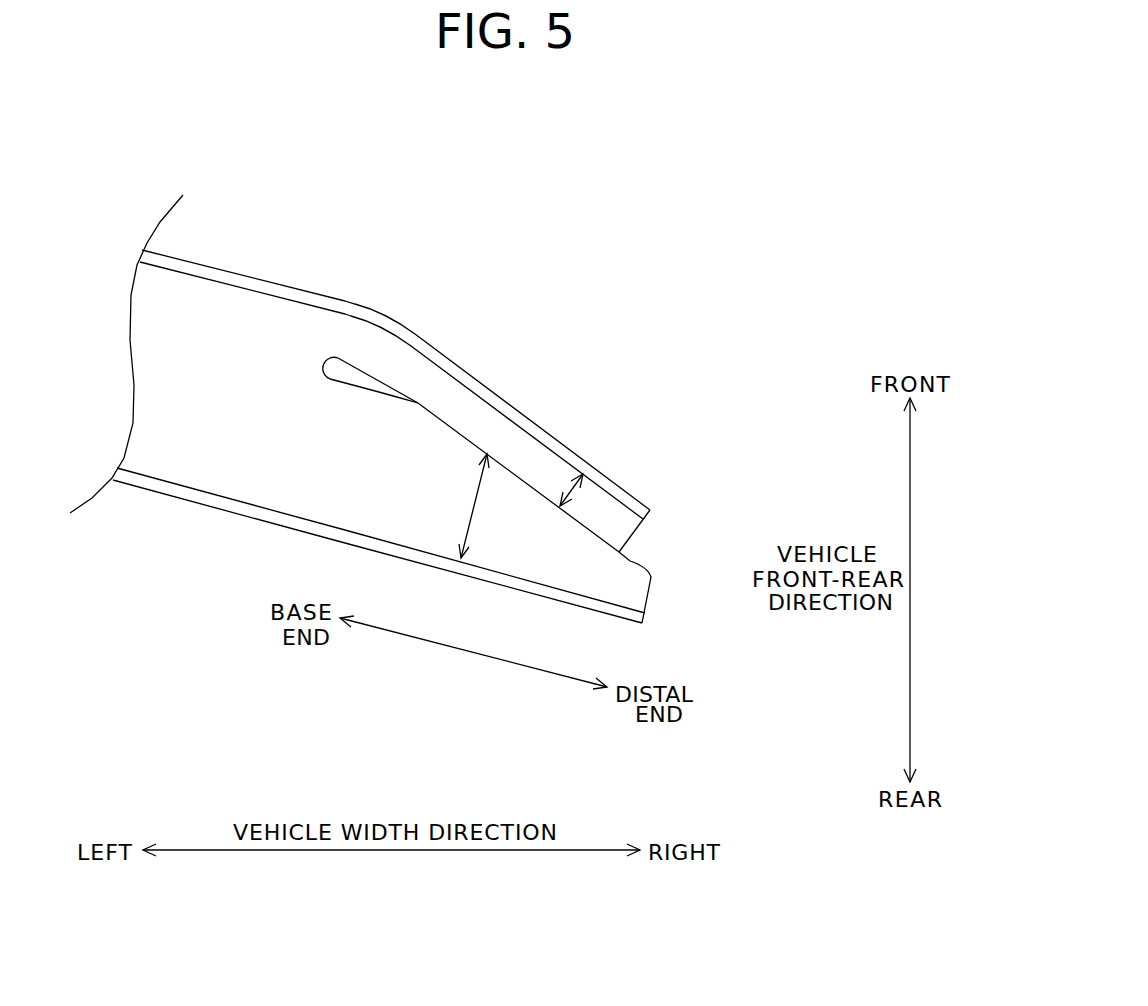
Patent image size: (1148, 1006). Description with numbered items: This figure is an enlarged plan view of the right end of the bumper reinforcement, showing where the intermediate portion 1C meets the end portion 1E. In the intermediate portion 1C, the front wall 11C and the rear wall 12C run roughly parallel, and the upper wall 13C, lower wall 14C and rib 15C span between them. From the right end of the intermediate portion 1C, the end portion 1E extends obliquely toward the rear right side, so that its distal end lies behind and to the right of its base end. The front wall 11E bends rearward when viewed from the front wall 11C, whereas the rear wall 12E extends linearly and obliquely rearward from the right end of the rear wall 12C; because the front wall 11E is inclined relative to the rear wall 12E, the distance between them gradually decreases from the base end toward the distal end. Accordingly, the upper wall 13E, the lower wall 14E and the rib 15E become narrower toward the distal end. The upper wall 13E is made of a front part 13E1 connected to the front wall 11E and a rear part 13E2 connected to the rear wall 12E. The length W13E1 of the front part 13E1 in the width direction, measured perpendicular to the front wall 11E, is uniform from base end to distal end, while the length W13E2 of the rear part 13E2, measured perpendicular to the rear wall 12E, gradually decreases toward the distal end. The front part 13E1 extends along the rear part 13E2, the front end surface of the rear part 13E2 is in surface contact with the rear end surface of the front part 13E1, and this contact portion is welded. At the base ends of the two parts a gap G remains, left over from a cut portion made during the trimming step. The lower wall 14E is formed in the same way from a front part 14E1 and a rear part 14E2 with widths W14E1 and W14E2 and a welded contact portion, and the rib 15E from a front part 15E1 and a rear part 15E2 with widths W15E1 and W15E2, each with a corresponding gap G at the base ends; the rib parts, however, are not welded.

The intermediate portion 1C is at (373, 264).
The end portion 1E is at (361, 256).
The front wall 11C is at (213, 267).
The rear wall 12C is at (147, 489).
The upper wall 13C is at (197, 380).
The lower wall 14C is at (126, 354).
The rib 15C is at (126, 354).
The front wall 11E is at (507, 402).
The rear wall 12E is at (562, 600).
The upper wall 13E is at (641, 585).
The lower wall 14E is at (471, 456).
The rib 15E is at (471, 456).
The front part 13E1 is at (447, 383).
The front part 14E1 is at (478, 455).
The front part 15E1 is at (478, 455).
The rear part 13E2 is at (583, 563).
The rear part 14E2 is at (635, 587).
The rear part 15E2 is at (635, 587).
The gap G is at (363, 377).
The length of front part in width direction W13E1 is at (664, 392).
The length of front part in width direction W14E1 is at (571, 490).
The length of front part in width direction W15E1 is at (571, 490).
The length of rear part in width direction W13E2 is at (326, 521).
The length of rear part in width direction W14E2 is at (474, 506).
The length of rear part in width direction W15E2 is at (474, 506).